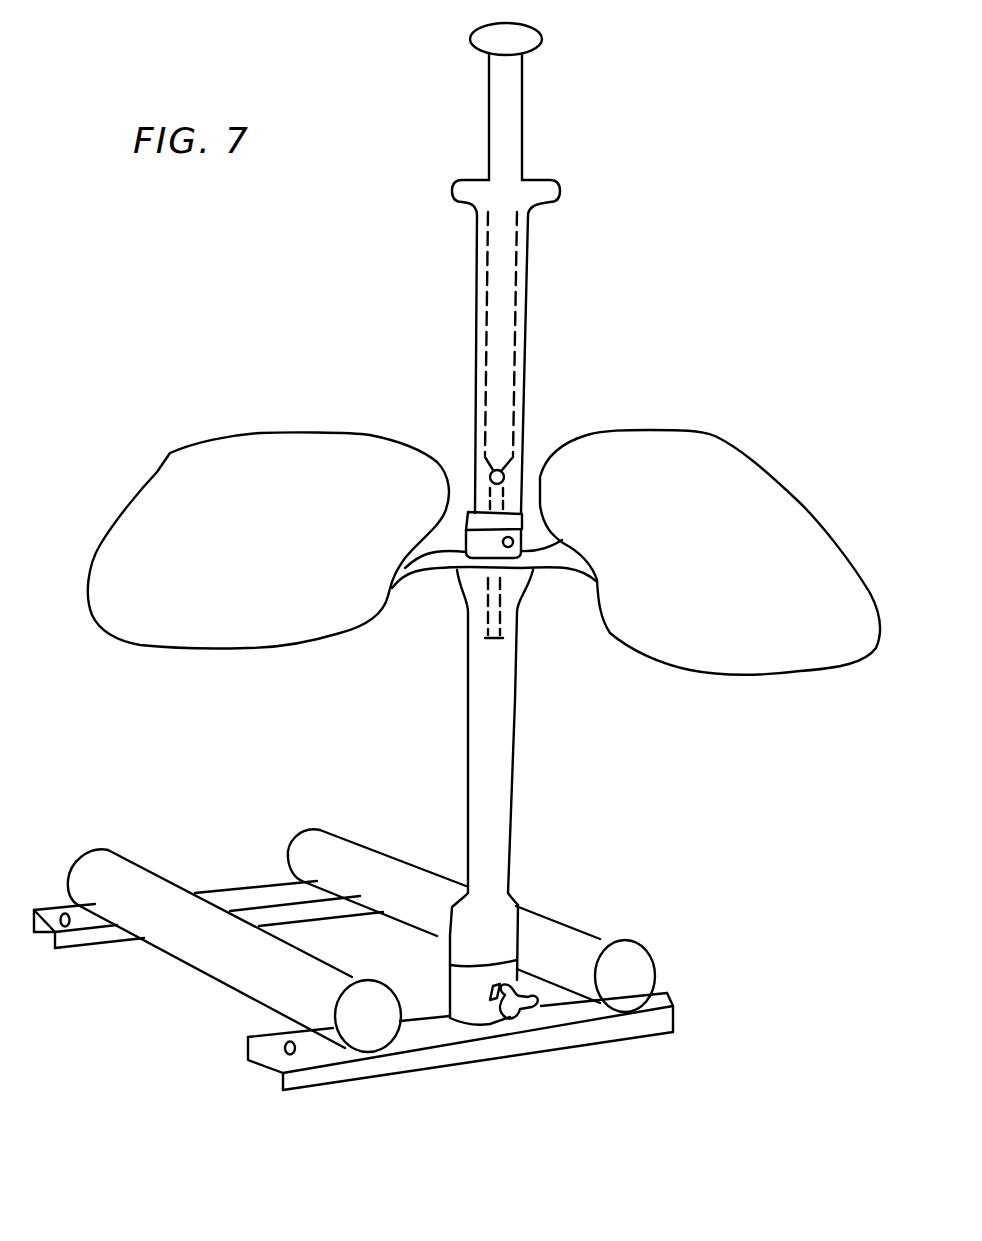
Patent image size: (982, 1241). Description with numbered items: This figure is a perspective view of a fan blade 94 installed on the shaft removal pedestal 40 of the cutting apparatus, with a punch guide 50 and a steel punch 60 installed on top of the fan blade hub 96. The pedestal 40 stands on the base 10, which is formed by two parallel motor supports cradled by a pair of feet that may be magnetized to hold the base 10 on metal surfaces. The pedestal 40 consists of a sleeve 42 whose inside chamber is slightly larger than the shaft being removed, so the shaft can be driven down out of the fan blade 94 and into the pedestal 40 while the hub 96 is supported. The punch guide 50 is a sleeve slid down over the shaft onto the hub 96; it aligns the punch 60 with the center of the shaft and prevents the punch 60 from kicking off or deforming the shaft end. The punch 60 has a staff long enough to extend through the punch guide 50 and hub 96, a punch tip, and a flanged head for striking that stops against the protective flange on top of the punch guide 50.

The base 10 is at (183, 985).
The shaft removal pedestal 40 is at (530, 762).
The sleeve 42 is at (466, 755).
The punch guide 50 is at (545, 305).
The punch 60 is at (537, 110).
The fan blade 94 is at (307, 432).
The fan blade hub 96 is at (470, 520).